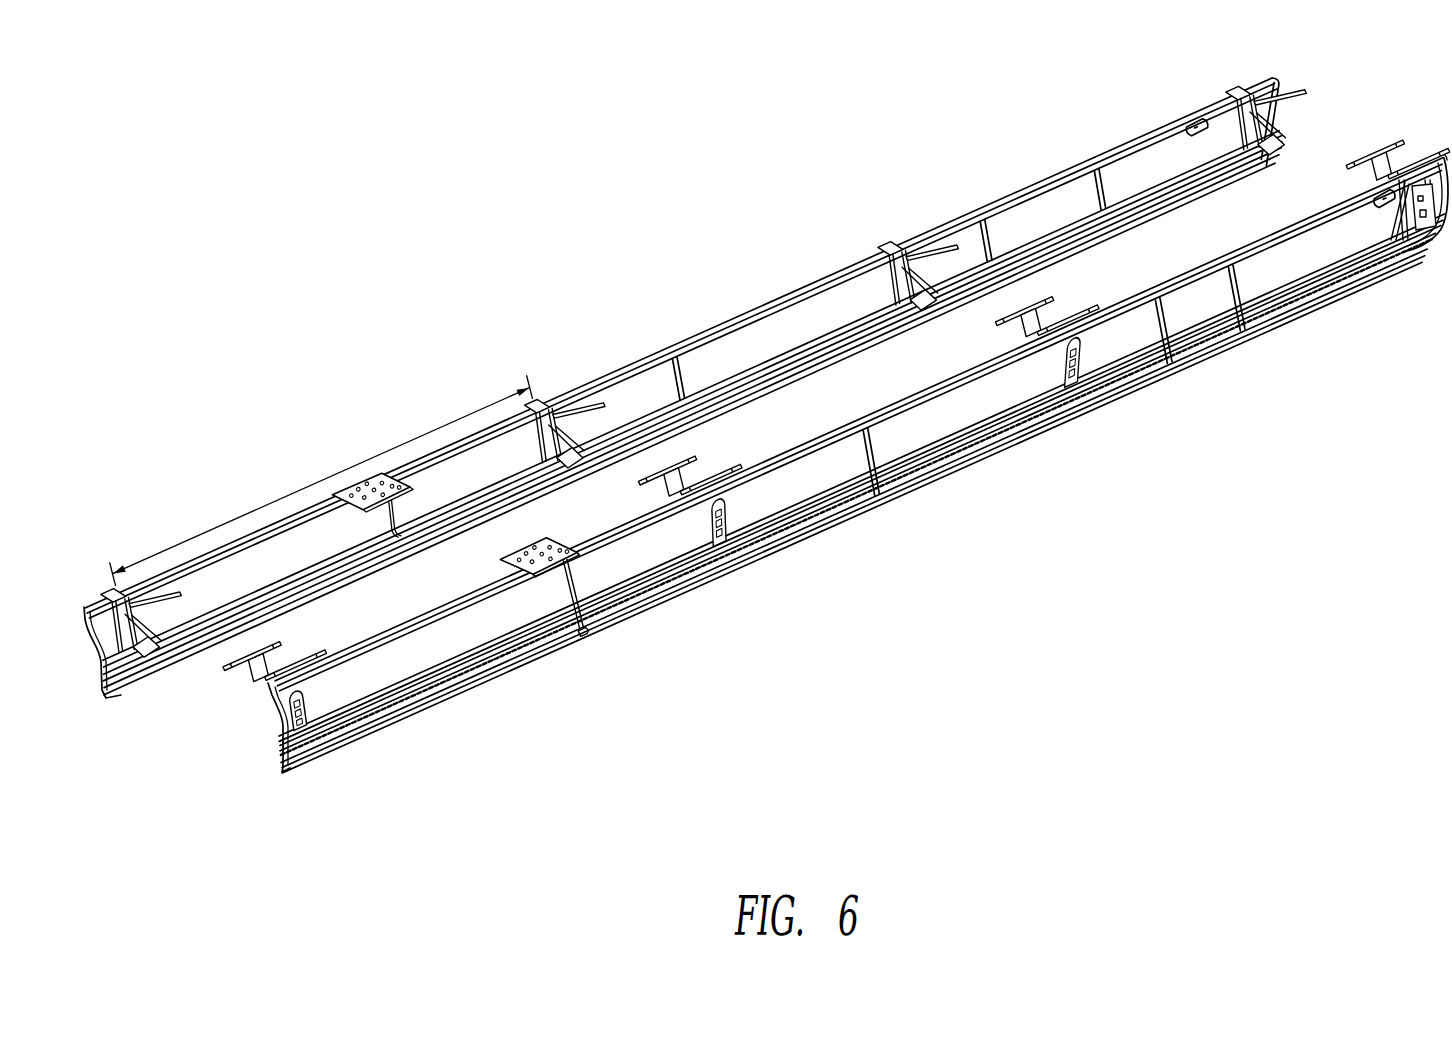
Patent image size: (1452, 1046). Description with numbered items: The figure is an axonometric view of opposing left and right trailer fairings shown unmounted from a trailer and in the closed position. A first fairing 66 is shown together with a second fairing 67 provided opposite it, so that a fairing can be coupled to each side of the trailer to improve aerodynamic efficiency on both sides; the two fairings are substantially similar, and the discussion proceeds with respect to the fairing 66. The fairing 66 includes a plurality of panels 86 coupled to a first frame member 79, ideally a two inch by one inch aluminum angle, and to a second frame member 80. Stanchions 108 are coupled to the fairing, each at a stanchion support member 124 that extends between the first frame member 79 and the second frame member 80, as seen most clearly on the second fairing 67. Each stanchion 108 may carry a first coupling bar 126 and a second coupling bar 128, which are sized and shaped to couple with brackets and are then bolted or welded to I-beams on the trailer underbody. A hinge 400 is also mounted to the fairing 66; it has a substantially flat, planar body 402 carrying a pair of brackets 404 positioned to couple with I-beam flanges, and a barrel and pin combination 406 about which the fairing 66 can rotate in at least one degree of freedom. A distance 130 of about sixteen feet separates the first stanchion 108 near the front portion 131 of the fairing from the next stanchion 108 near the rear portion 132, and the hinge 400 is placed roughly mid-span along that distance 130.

The fairing 66 is at (823, 520).
The second fairing 67 is at (677, 357).
The first frame member 79 is at (710, 332).
The second frame member 80 is at (842, 338).
The panels 86 is at (815, 470).
The stanchion 108 is at (283, 650).
The stanchion support member 124 is at (893, 287).
The first coupling bar 126 is at (225, 667).
The second coupling bar 128 is at (1383, 178).
The distance 130 is at (320, 478).
The front portion 131 is at (1266, 284).
The rear portion 132 is at (404, 662).
The hinge 400 is at (555, 571).
The body 402 is at (533, 548).
The brackets 404 is at (547, 543).
The barrel and pin combination 406 is at (590, 632).